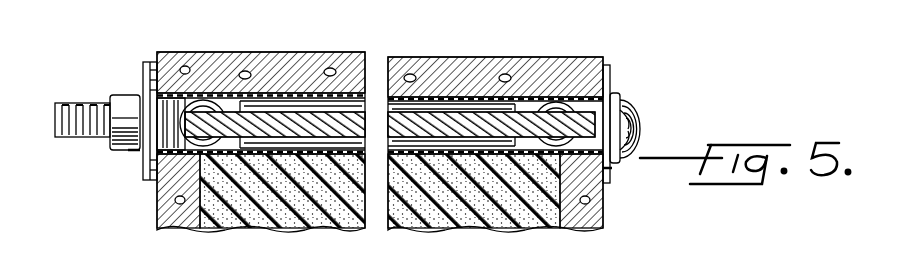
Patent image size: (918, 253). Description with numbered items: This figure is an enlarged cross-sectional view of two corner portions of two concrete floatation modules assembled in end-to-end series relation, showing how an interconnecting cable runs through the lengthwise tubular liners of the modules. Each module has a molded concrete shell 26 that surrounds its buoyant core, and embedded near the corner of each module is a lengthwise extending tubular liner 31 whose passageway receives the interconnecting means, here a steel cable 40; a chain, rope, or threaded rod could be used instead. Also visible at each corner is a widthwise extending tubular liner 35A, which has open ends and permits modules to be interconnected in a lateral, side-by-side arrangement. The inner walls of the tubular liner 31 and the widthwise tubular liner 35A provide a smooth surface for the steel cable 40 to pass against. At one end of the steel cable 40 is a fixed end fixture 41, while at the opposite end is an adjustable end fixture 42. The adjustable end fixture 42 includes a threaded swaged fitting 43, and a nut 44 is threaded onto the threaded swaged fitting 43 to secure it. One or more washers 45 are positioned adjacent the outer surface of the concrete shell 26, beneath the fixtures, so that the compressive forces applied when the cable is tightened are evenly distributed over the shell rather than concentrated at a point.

The molded concrete shell 26 is at (183, 62).
The lengthwise extending tubular liner 31 is at (420, 100).
The widthwise extending tubular liner 35A is at (212, 97).
The steel cable 40 is at (257, 118).
The fixed end fixture 41 is at (632, 90).
The adjustable end fixture 42 is at (128, 83).
The threaded swaged fitting 43 is at (66, 103).
The nut 44 is at (118, 147).
The washer 45 is at (138, 160).